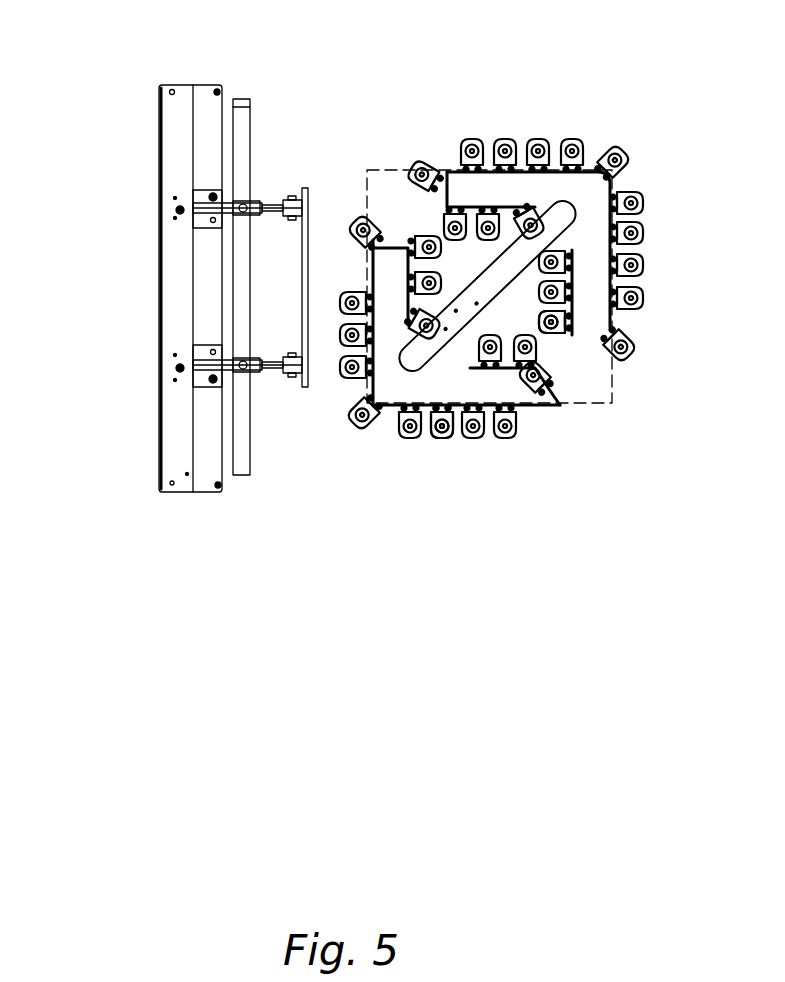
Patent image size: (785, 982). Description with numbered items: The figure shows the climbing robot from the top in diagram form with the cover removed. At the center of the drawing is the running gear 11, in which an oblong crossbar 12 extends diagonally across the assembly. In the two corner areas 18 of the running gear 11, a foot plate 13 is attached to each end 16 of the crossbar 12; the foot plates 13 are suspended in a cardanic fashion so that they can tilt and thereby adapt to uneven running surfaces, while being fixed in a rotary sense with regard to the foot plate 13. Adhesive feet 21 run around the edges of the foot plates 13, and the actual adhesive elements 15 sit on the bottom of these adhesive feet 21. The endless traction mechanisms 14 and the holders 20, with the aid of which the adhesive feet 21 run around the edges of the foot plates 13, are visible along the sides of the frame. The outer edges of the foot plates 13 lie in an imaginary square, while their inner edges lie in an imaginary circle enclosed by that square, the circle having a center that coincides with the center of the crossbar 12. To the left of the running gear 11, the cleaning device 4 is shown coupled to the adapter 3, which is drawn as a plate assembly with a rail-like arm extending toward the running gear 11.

The adapter 3 is at (308, 270).
The cleaning device 4 is at (78, 672).
The running gear 11 is at (511, 332).
The crossbar 12 is at (483, 290).
The foot plate 13 is at (488, 192).
The endless traction mechanism 14 is at (610, 318).
The adhesive element 15 is at (435, 433).
The end of the crossbar 16 is at (562, 207).
The corner area 18 is at (498, 241).
The holder 20 is at (577, 327).
The adhesive foot 21 is at (640, 300).